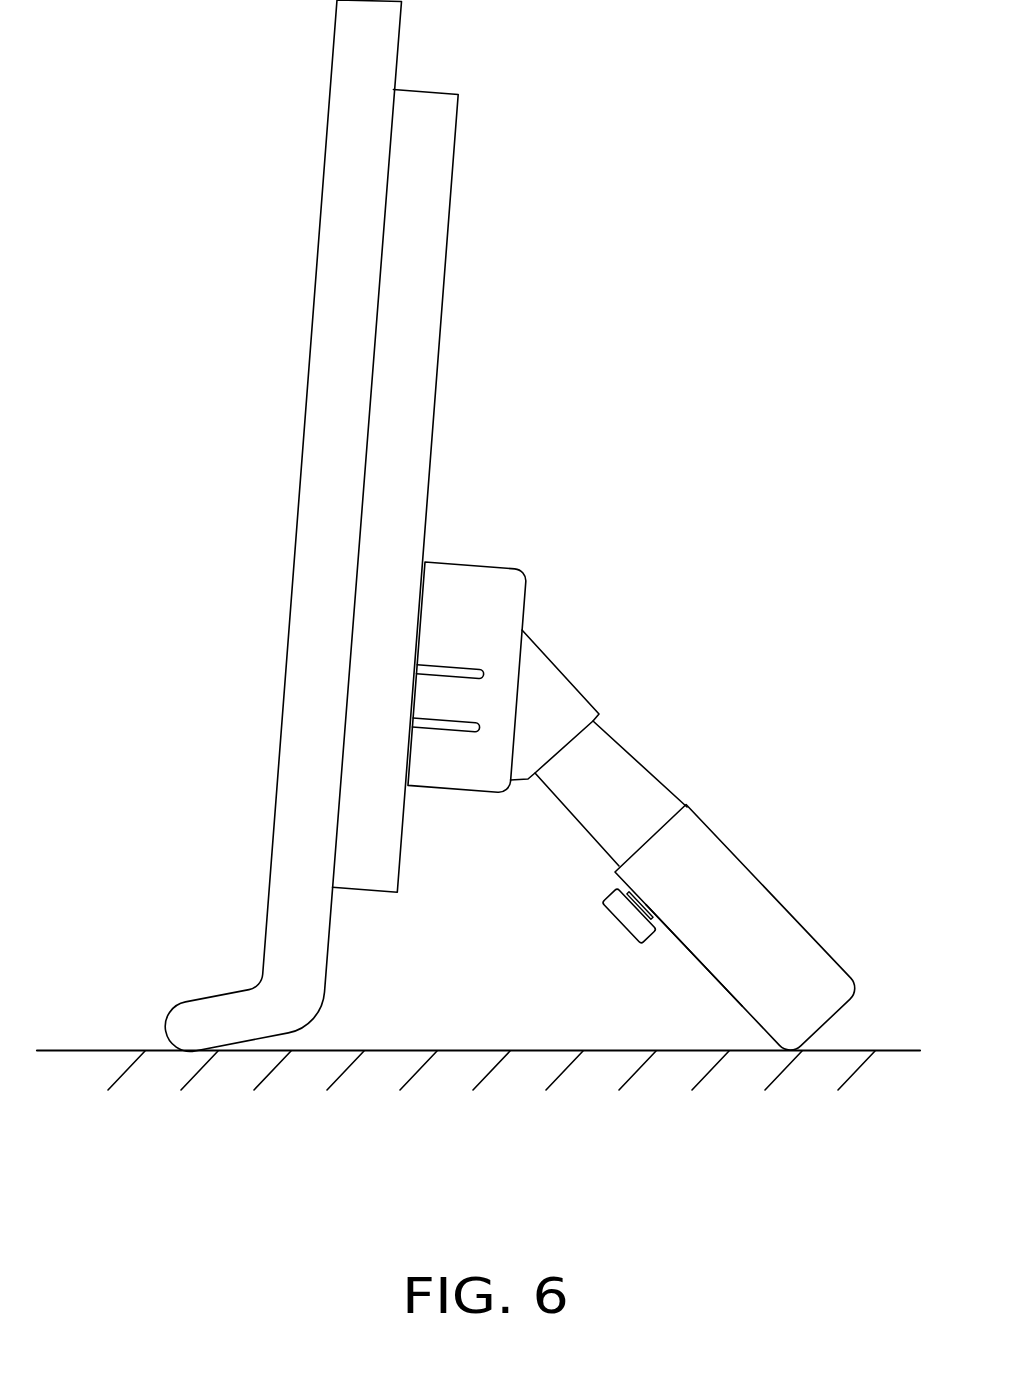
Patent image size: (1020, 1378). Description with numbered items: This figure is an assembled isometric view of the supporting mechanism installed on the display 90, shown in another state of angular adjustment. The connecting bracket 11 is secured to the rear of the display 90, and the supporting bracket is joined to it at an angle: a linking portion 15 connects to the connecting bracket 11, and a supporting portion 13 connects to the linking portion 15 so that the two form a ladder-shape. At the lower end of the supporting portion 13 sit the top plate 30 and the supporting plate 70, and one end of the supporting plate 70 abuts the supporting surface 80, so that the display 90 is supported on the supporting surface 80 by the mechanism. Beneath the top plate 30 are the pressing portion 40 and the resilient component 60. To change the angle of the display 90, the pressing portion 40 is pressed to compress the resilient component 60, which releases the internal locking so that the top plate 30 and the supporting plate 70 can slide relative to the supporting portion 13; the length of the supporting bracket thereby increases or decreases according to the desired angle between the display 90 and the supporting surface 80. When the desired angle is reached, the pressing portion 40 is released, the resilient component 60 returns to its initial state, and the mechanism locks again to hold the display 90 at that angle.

The display 90 is at (360, 180).
The connecting bracket 11 is at (487, 585).
The linking portion 15 is at (550, 698).
The supporting portion 13 is at (617, 778).
The top plate 30 is at (768, 890).
The resilient component 60 is at (628, 892).
The pressing portion 40 is at (633, 918).
The supporting plate 70 is at (688, 950).
The supporting surface 80 is at (110, 1050).